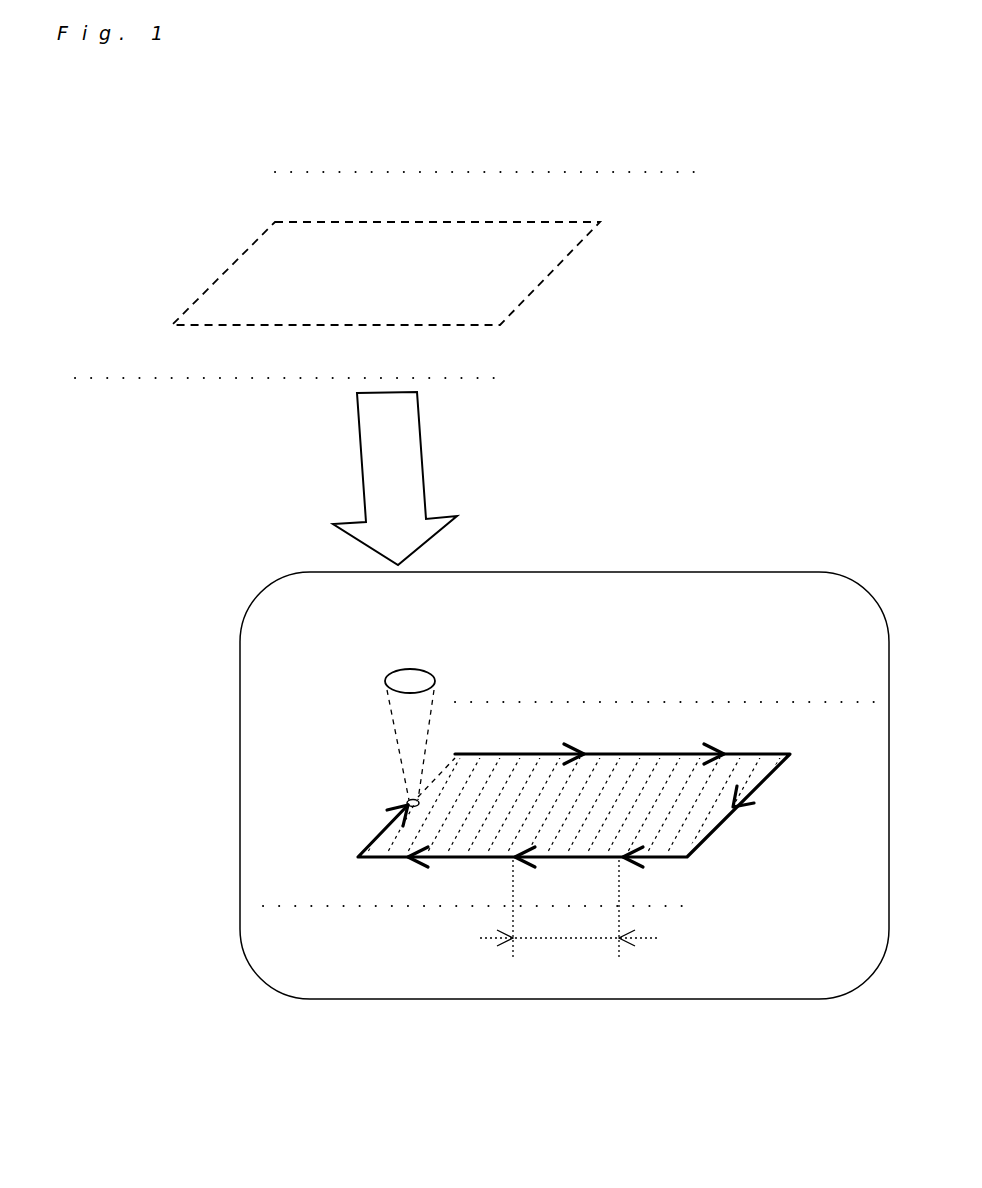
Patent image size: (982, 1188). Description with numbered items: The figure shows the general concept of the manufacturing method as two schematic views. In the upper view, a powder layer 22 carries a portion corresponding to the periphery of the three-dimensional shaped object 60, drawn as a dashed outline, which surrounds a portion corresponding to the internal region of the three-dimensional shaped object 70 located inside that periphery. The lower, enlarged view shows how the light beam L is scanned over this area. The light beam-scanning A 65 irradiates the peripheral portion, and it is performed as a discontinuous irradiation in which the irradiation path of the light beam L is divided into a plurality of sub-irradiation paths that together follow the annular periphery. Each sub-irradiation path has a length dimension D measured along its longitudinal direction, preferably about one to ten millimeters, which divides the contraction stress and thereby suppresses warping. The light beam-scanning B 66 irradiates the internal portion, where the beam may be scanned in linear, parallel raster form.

The powder layer 22 is at (277, 163).
The portion corresponding to periphery of three-dimensional shaped object 60 is at (565, 222).
The portion corresponding to internal region of three-dimensional shaped object 70 is at (396, 284).
The light beam L is at (407, 719).
The light beam-scanning B 66 is at (438, 788).
The light beam-scanning A 65 is at (637, 746).
The length dimension D is at (570, 919).